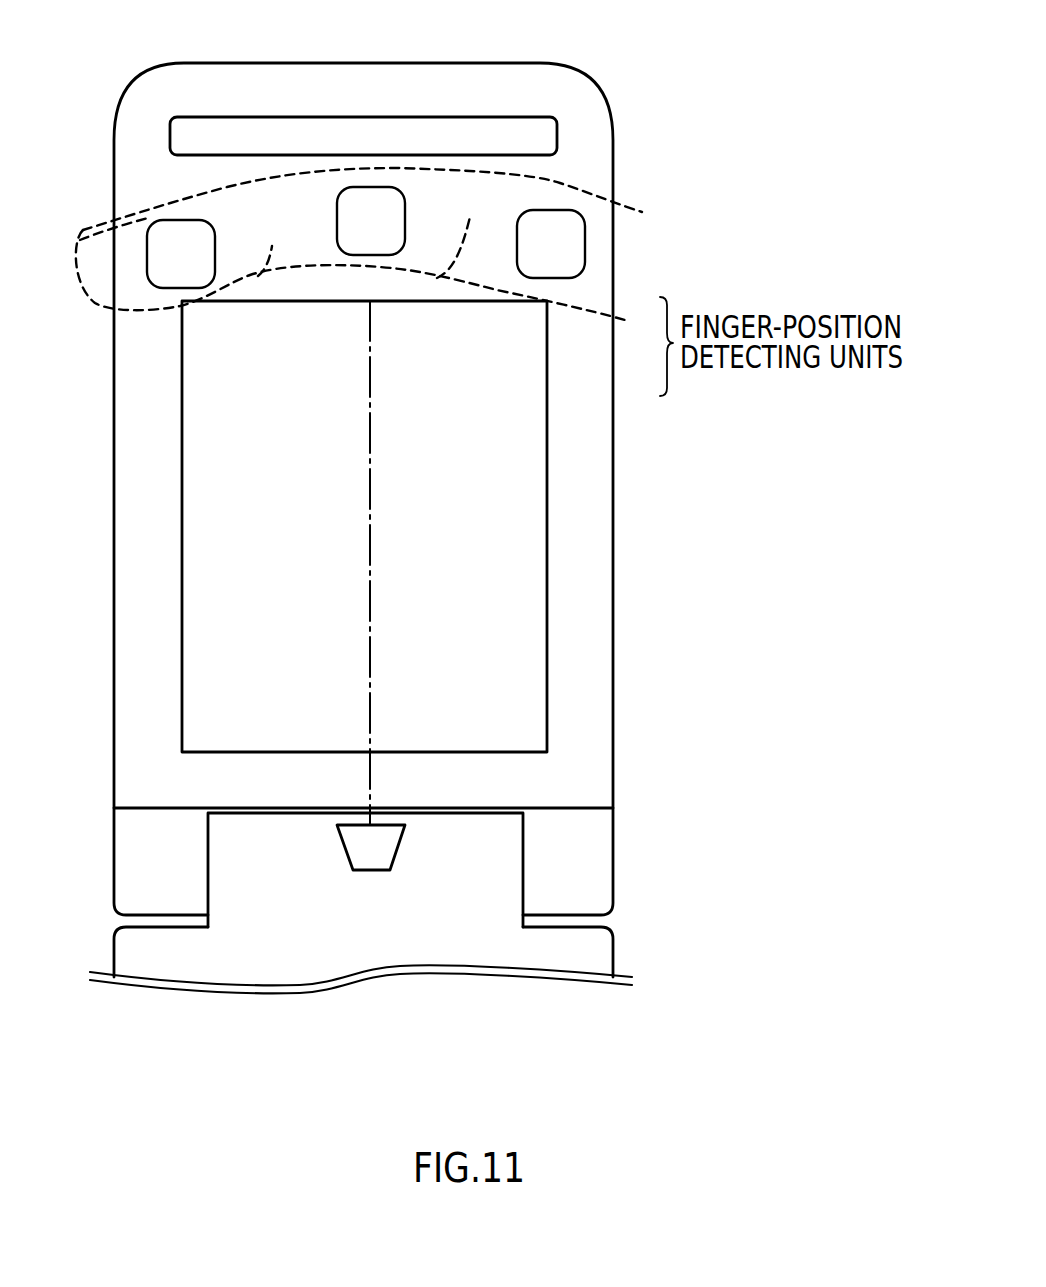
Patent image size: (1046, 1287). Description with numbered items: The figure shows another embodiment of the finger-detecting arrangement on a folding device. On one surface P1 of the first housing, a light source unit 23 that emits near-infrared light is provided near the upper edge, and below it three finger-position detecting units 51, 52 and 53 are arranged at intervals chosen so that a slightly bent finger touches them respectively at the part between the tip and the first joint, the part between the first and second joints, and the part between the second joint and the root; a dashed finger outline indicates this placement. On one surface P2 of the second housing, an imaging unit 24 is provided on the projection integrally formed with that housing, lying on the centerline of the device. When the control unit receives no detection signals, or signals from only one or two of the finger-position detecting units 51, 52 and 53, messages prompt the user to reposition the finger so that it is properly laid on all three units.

The light source unit 23 is at (457, 117).
The imaging unit 24 is at (387, 856).
The finger-position detecting unit 51 is at (555, 272).
The finger-position detecting unit 52 is at (373, 250).
The finger-position detecting unit 53 is at (207, 270).
The surface of the first housing P1 is at (605, 660).
The surface of the second housing P2 is at (607, 949).